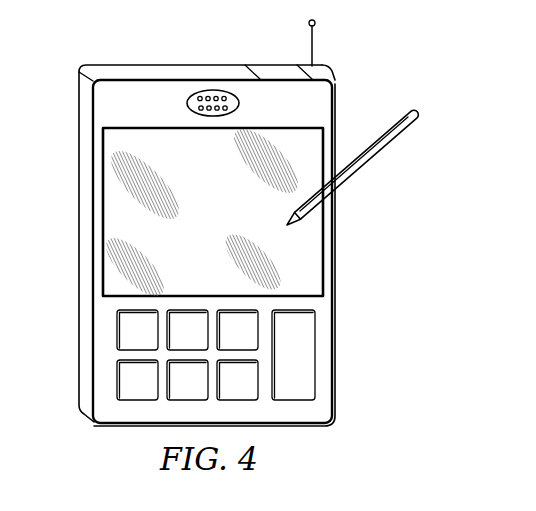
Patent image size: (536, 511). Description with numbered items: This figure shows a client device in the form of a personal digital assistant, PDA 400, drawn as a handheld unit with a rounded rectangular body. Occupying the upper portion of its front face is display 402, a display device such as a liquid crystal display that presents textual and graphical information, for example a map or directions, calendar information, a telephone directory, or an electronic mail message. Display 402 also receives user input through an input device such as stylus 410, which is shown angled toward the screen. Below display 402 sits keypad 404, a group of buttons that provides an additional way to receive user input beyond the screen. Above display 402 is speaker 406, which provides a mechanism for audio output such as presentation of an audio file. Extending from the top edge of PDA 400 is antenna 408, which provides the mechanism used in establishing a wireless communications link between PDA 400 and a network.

The PDA 400 is at (336, 107).
The display 402 is at (235, 227).
The keypad 404 is at (342, 310).
The speaker 406 is at (239, 103).
The antenna 408 is at (313, 50).
The stylus 410 is at (366, 165).